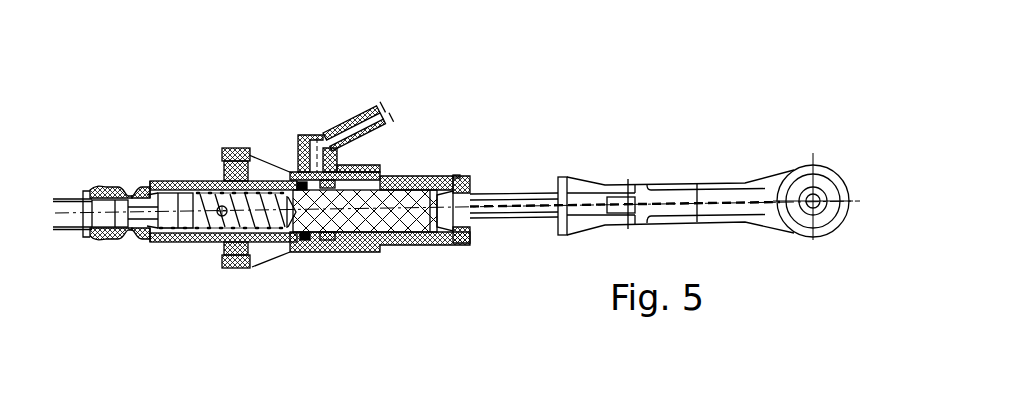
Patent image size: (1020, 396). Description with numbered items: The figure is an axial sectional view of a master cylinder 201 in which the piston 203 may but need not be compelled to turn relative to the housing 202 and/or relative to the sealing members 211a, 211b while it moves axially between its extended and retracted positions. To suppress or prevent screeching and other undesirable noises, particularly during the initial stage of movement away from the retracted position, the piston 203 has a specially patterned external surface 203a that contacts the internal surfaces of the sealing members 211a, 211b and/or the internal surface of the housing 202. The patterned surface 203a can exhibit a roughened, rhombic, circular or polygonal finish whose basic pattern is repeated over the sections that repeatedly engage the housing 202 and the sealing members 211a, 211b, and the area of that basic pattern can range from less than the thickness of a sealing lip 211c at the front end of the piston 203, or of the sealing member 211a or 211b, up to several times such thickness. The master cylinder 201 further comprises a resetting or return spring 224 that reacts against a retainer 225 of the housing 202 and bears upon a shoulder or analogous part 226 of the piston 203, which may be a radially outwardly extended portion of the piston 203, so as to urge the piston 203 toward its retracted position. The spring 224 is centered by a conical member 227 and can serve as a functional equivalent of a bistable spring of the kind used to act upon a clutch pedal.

The master cylinder 201 is at (549, 116).
The housing 202 is at (383, 176).
The piston 203 is at (427, 190).
The patterned external surface 203a is at (407, 178).
The sealing member 211a is at (308, 247).
The sealing member 211b is at (347, 253).
The sealing lip 211c is at (287, 172).
The return spring 224 is at (201, 243).
The retainer 225 is at (145, 244).
The shoulder 226 is at (279, 170).
The conical member 227 is at (151, 182).